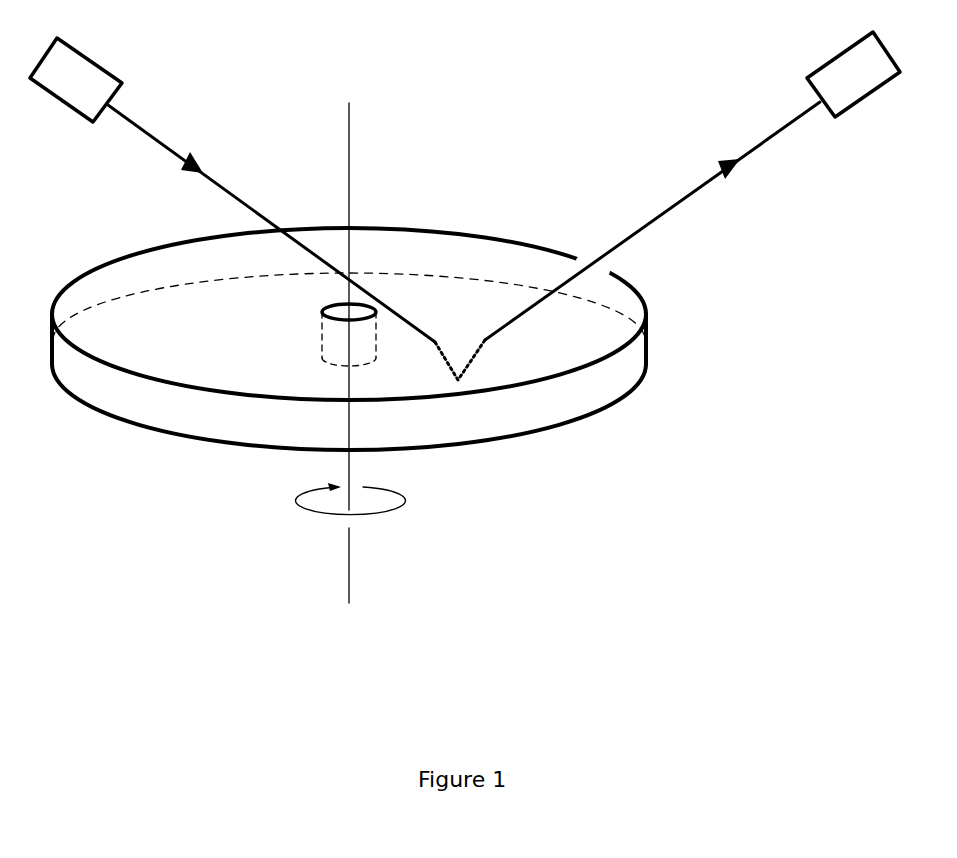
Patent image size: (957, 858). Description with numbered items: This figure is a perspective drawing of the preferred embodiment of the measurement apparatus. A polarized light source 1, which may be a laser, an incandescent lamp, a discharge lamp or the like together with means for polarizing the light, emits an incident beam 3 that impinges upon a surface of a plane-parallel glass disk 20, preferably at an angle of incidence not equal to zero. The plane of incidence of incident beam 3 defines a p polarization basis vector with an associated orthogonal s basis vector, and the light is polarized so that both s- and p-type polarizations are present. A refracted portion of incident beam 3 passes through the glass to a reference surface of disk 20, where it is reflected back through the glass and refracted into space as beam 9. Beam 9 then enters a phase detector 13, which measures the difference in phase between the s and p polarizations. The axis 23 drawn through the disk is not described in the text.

The polarized light source 1 is at (76, 75).
The incident beam 3 is at (271, 223).
The beam 9 is at (652, 221).
The phase detector 13 is at (847, 70).
The plane-parallel glass disk 20 is at (647, 338).
The axis of rotation 23 is at (349, 181).